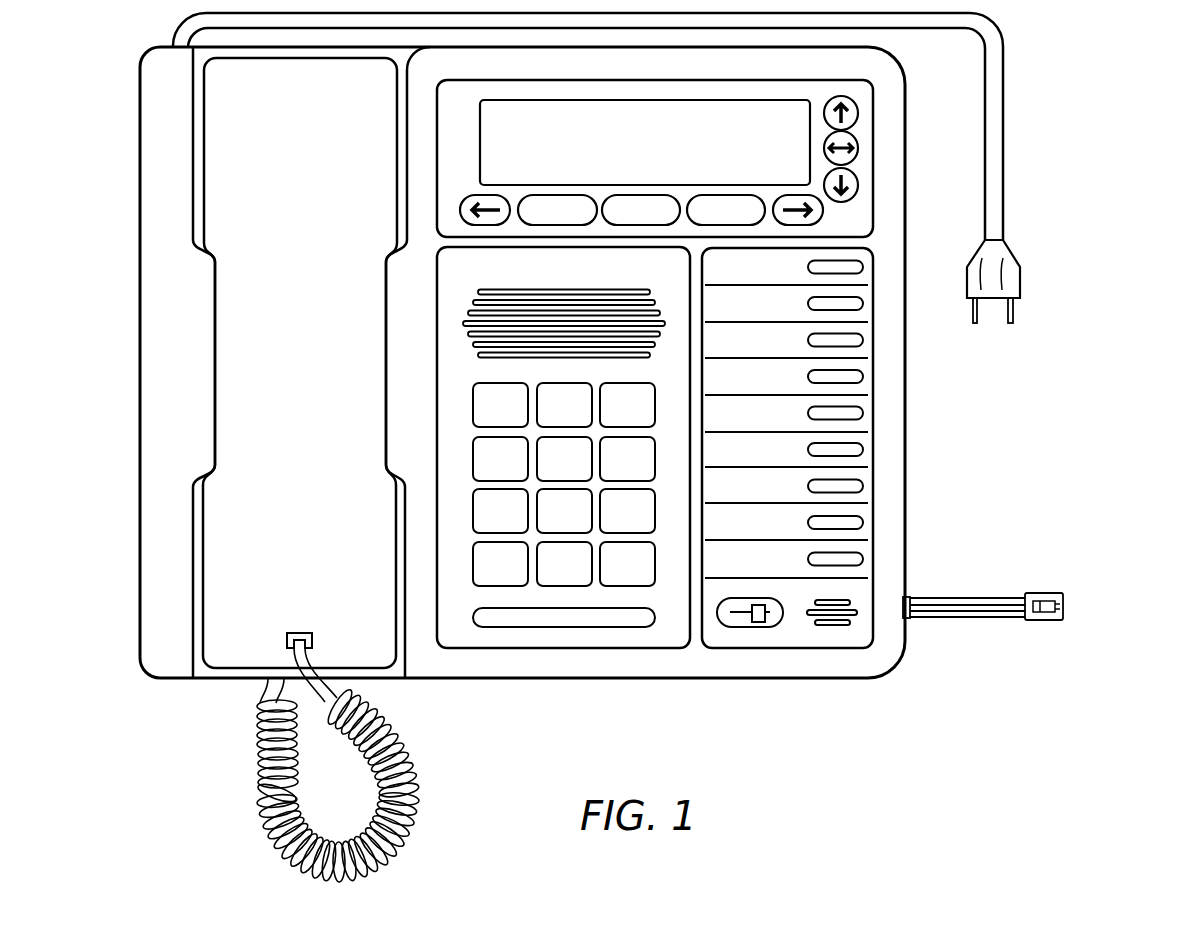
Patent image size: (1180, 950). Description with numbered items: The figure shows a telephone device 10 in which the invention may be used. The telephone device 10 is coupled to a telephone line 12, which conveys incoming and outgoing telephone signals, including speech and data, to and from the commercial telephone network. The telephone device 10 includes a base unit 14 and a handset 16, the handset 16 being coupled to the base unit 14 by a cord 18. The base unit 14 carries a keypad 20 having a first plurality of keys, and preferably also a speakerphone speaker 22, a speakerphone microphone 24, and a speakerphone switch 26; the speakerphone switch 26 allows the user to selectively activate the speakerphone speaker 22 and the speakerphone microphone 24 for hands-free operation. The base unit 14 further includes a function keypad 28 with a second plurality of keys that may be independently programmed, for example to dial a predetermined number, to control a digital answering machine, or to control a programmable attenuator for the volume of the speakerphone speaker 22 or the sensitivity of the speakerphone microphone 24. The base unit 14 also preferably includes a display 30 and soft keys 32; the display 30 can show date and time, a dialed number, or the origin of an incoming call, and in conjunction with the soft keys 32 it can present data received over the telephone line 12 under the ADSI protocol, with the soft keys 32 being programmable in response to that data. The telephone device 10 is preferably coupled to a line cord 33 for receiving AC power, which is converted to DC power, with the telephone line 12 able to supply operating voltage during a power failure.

The telephone device 10 is at (1106, 74).
The telephone line 12 is at (978, 597).
The base unit 14 is at (546, 679).
The handset 16 is at (318, 418).
The cord 18 is at (258, 756).
The keypad 20 is at (463, 425).
The speakerphone speaker 22 is at (608, 309).
The speakerphone microphone 24 is at (853, 617).
The speakerphone switch 26 is at (758, 624).
The function keypad 28 is at (875, 365).
The display 30 is at (690, 154).
The soft keys 32 is at (553, 195).
The line cord 33 is at (1005, 146).